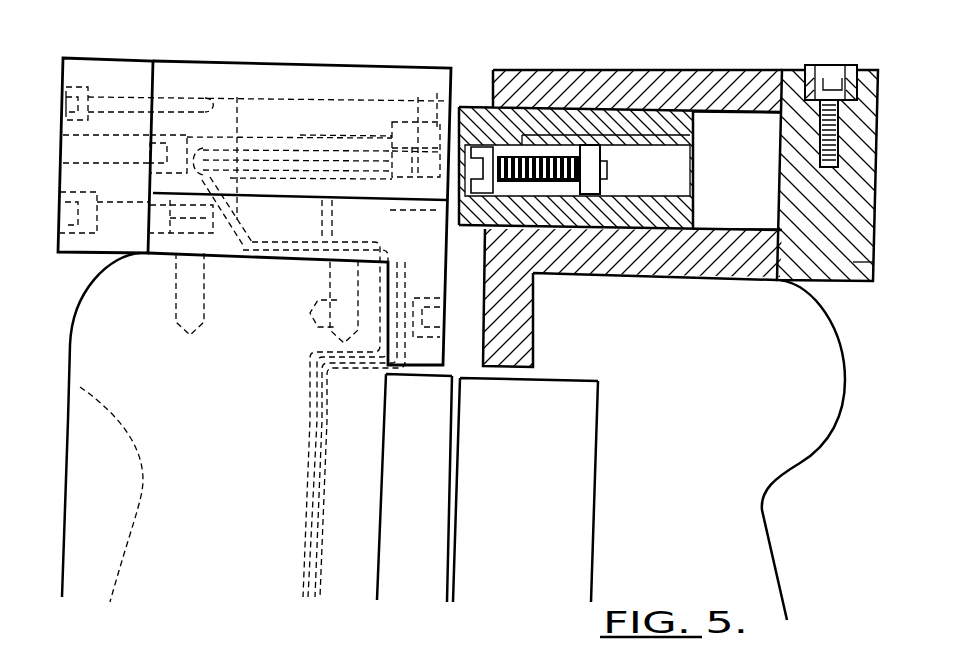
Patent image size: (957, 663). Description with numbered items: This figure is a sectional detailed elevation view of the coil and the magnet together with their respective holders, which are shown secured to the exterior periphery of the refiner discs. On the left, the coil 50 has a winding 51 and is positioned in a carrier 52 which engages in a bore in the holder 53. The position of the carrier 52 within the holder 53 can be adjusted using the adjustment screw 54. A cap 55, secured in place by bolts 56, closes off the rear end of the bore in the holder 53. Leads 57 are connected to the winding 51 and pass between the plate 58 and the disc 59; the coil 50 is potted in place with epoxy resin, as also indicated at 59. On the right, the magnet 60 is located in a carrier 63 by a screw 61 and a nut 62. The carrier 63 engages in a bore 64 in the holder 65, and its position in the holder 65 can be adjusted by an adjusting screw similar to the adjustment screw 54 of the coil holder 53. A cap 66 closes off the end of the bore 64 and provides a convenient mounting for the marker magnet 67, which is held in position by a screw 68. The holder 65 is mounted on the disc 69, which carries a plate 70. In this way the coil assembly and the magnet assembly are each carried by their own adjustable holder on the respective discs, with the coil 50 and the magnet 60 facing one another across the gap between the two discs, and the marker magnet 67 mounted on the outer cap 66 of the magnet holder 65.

The coil 50 is at (418, 100).
The winding 51 is at (400, 155).
The carrier 52 is at (338, 100).
The holder 53 is at (270, 64).
The adjustment screw 54 is at (183, 137).
The cap 55 is at (121, 64).
The bolts 56 is at (63, 107).
The leads 57 is at (287, 258).
The plate 58 is at (434, 601).
The disc 59 is at (50, 403).
The magnet 60 is at (470, 135).
The screw 61 is at (547, 157).
The nut 62 is at (603, 188).
The carrier 63 is at (650, 118).
The bore 64 is at (757, 122).
The holder 65 is at (731, 82).
The cap 66 is at (868, 153).
The marker magnet 67 is at (857, 70).
The screw 68 is at (835, 128).
The disc 69 is at (838, 344).
The plate 70 is at (596, 470).